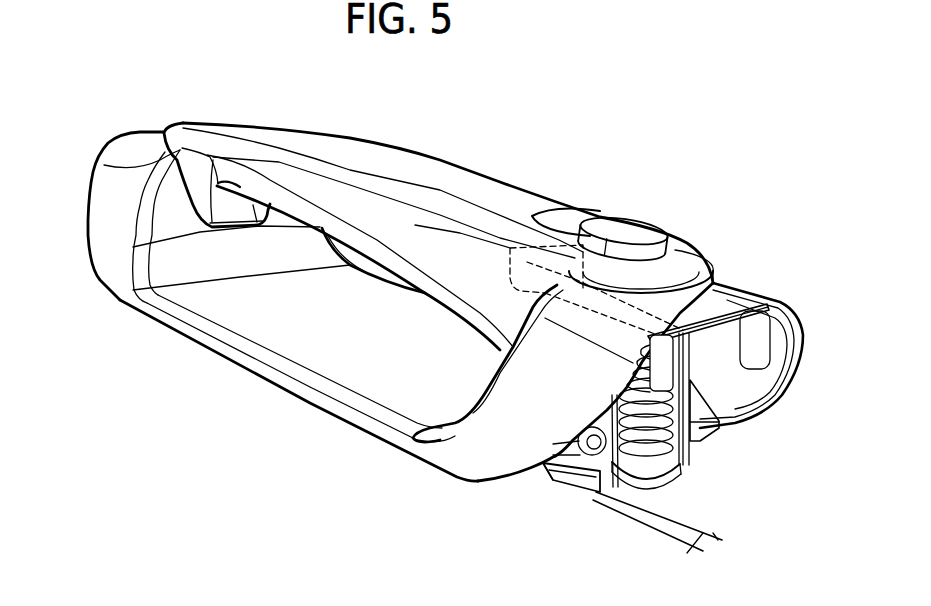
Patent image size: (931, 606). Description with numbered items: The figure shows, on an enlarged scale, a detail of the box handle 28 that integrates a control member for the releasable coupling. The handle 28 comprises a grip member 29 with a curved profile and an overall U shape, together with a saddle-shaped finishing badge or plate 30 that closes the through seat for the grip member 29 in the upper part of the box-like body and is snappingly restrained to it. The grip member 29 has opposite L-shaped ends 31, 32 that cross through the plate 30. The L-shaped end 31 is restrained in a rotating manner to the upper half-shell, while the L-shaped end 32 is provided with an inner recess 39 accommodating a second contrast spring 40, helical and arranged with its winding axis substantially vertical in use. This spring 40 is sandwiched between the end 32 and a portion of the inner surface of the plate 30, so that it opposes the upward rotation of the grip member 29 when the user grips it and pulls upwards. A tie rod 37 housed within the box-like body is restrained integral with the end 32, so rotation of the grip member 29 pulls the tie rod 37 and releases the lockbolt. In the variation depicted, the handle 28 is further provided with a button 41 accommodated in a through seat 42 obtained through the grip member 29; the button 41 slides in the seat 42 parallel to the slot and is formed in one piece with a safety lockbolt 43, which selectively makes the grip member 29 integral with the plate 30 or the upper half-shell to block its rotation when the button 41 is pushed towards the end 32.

The handle 28 is at (637, 140).
The grip member 29 is at (417, 168).
The finishing badge or plate 30 is at (473, 456).
The L-shaped end 31 is at (200, 187).
The L-shaped end 32 is at (683, 483).
The tie rod 37 is at (663, 532).
The inner recess 39 is at (622, 470).
The second contrast spring 40 is at (717, 432).
The button 41 is at (628, 230).
The through seat 42 is at (563, 224).
The safety lockbolt 43 is at (710, 303).